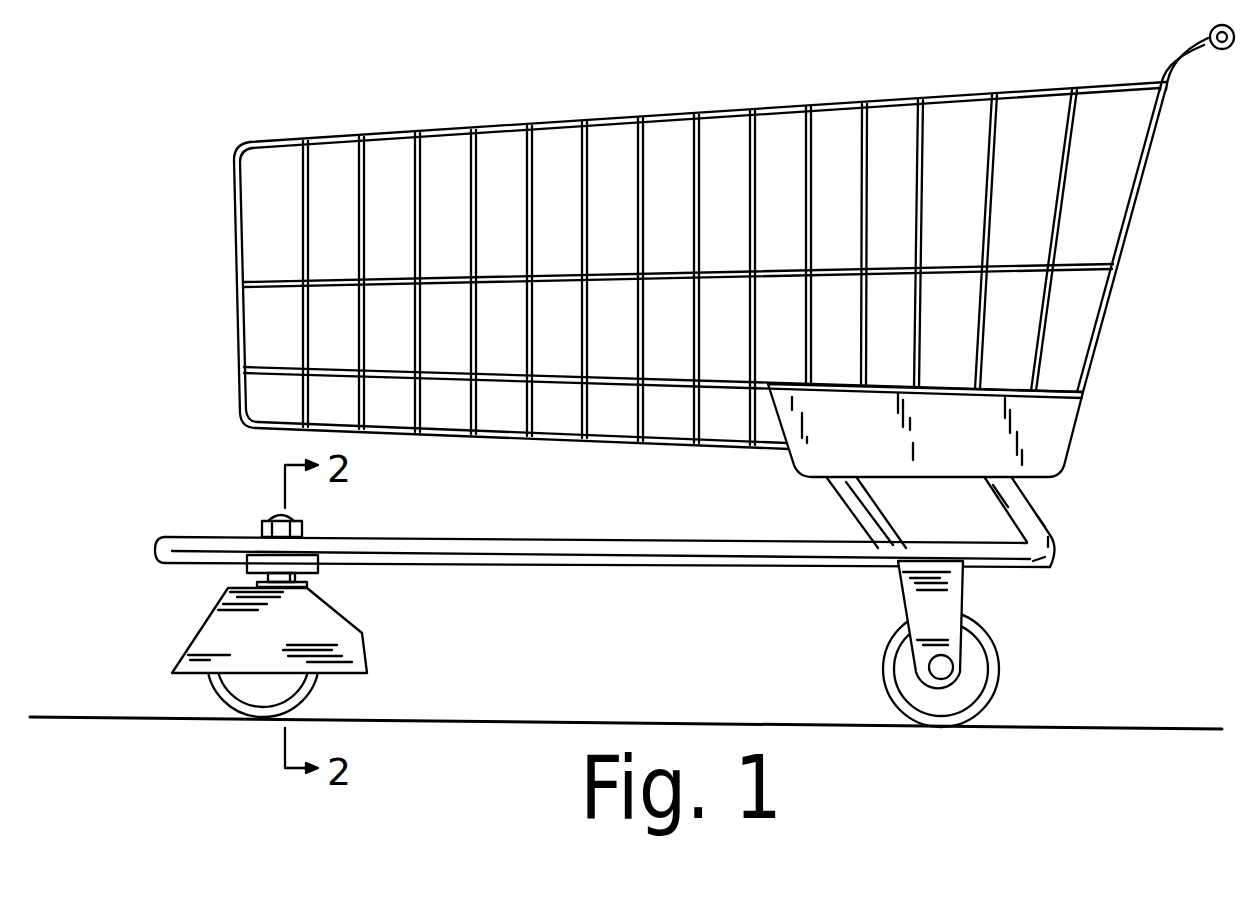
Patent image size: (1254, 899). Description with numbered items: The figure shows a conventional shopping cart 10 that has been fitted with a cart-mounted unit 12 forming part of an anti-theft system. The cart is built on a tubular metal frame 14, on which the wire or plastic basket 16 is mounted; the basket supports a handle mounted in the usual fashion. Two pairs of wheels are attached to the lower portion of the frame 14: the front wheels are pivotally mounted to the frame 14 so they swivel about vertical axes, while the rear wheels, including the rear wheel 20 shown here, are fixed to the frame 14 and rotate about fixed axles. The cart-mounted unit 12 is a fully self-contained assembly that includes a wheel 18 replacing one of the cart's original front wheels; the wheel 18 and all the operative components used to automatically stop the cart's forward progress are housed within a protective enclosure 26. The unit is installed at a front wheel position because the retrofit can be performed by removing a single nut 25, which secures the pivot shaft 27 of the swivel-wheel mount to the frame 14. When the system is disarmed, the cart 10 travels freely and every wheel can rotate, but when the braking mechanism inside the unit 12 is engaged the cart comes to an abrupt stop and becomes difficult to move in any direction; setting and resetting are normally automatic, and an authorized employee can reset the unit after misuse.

The shopping cart 10 is at (683, 111).
The cart-mounted unit 12 is at (186, 632).
The tubular metal frame 14 is at (1034, 500).
The basket 16 is at (241, 298).
The wheel 18 is at (313, 688).
The rear wheel 20 is at (941, 644).
The nut 25 is at (305, 525).
The protective enclosure 26 is at (370, 657).
The pivot shaft 27 is at (300, 577).